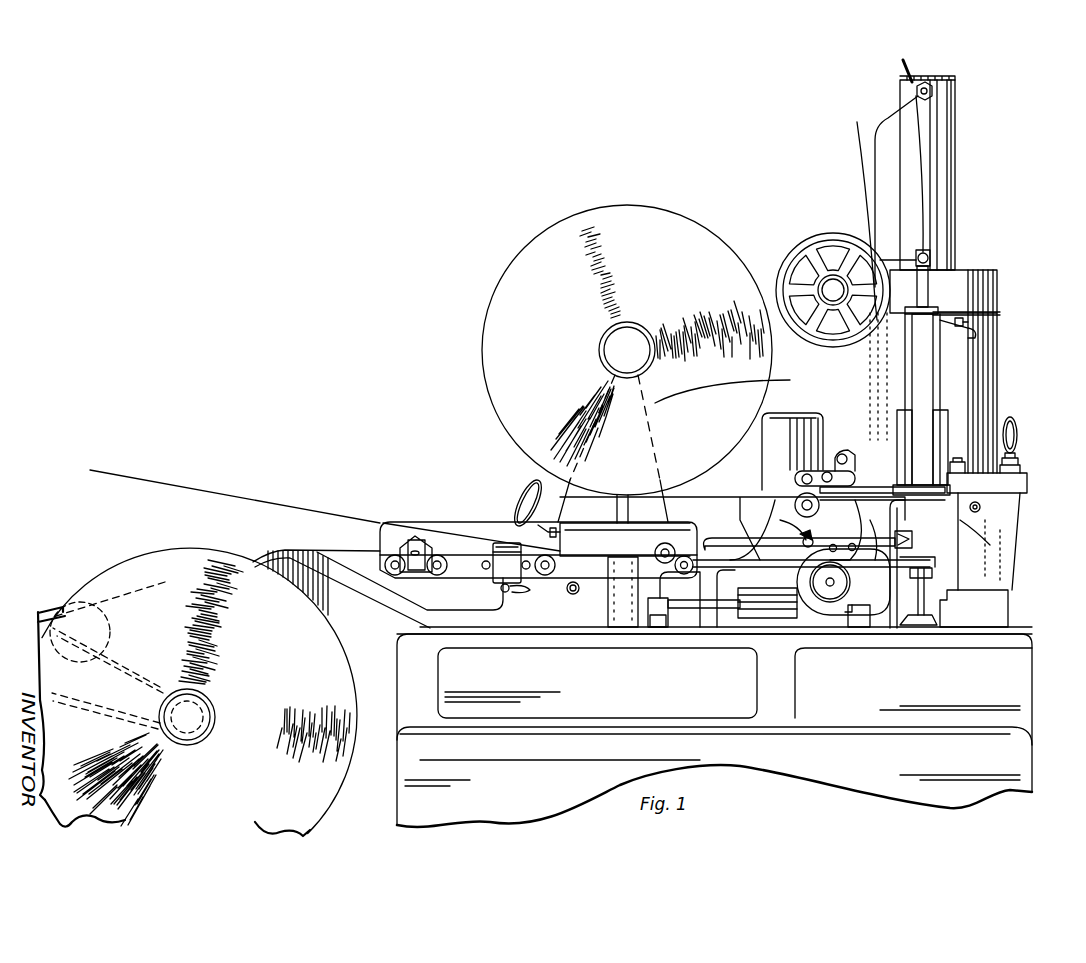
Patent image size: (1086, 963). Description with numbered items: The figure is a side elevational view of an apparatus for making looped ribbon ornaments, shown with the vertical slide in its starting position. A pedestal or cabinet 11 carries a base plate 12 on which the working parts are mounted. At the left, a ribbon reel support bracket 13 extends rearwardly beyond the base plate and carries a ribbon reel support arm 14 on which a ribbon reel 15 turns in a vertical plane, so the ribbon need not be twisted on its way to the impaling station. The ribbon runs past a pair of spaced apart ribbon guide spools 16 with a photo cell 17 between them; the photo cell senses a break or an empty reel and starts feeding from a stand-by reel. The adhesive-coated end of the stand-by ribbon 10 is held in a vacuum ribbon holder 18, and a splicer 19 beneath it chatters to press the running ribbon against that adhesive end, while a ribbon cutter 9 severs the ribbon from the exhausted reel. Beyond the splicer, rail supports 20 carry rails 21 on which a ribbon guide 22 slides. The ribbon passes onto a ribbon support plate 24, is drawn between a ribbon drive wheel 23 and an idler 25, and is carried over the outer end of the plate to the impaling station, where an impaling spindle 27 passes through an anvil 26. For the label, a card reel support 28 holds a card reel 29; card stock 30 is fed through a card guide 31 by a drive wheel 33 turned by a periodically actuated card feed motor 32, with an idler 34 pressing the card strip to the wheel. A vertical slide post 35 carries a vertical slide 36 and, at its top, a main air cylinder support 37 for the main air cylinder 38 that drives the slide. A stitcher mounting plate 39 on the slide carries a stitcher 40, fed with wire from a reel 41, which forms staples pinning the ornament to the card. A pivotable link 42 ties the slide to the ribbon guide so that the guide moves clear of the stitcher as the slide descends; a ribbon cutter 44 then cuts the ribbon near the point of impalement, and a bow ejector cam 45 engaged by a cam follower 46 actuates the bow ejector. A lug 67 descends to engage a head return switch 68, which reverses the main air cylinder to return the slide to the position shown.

The ribbon cutter 9 is at (505, 545).
The stand-by ribbon 10 is at (286, 497).
The pedestal or cabinet 11 is at (1012, 675).
The base plate 12 is at (1000, 633).
The ribbon reel support bracket 13 is at (336, 608).
The ribbon reel support arm 14 is at (112, 598).
The ribbon reel 15 is at (152, 566).
The ribbon guide spools 16 is at (397, 568).
The photo cell 17 is at (404, 546).
The vacuum ribbon holder 18 is at (622, 540).
The splicer 19 is at (615, 600).
The rail supports 20 is at (858, 618).
The rails 21 is at (706, 602).
The ribbon guide 22 is at (782, 620).
The ribbon drive wheel 23 is at (830, 590).
The ribbon support plate 24 is at (920, 562).
The idler 25 is at (810, 552).
The anvil 26 is at (950, 607).
The impaling spindle 27 is at (926, 577).
The card reel support 28 is at (733, 385).
The card reel 29 is at (664, 230).
The card stock 30 is at (754, 497).
The card guide 31 is at (860, 488).
The card feed motor 32 is at (795, 412).
The drive wheel 33 is at (795, 505).
The idler 34 is at (785, 481).
The vertical slide post 35 is at (965, 520).
The vertical slide 36 is at (985, 331).
The main air cylinder support 37 is at (965, 276).
The main air cylinder 38 is at (950, 166).
The stitcher mounting plate 39 is at (935, 430).
The stitcher 40 is at (922, 395).
The wire reel 41 is at (826, 240).
The pivotable link 42 is at (803, 540).
The ribbon cutter 44 is at (915, 538).
The bow ejector cam 45 is at (975, 555).
The cam follower 46 is at (978, 508).
The lug 67 is at (990, 326).
The head return switch 68 is at (1020, 480).